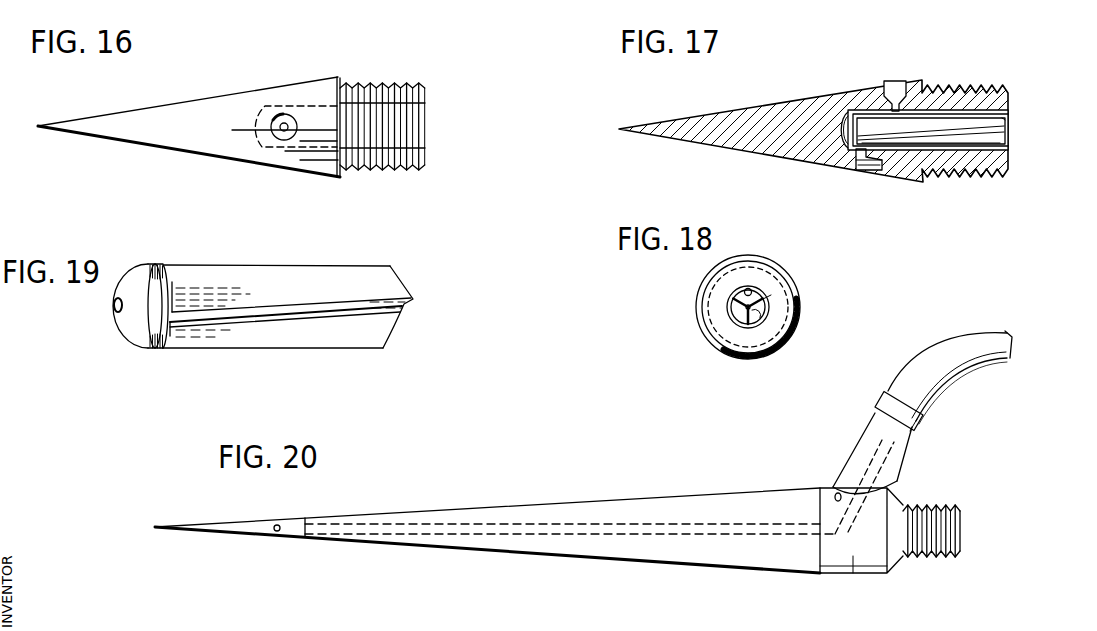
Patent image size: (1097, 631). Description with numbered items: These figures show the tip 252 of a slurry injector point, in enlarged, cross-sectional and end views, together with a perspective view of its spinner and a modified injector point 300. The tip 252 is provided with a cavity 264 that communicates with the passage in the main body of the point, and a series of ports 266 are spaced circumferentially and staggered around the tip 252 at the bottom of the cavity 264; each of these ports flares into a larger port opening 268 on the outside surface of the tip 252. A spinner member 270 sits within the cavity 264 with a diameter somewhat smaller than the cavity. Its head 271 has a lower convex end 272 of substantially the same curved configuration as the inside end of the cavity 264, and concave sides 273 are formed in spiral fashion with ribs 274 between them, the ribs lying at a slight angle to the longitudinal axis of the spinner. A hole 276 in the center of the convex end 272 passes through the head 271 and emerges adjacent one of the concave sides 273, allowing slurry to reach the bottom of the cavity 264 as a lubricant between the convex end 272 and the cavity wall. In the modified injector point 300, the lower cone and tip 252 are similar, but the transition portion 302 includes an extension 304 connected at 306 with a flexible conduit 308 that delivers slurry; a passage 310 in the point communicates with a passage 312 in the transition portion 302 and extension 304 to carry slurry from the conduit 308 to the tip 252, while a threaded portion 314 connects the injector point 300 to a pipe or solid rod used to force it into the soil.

In FIG. 16, the tip 252 is at (177, 120).
In FIG. 20, the tip 252 is at (220, 533).
In FIG. 16, the cavity 264 is at (322, 106).
In FIG. 17, the cavity 264 is at (1005, 116).
In FIG. 18, the cavity 264 is at (730, 311).
In FIG. 16, the ports 266 is at (278, 115).
In FIG. 17, the ports 266 is at (897, 82).
In FIG. 20, the ports 266 is at (289, 519).
In FIG. 17, the port opening 268 is at (868, 172).
In FIG. 17, the spinner member 270 is at (1012, 133).
In FIG. 19, the spinner member 270 is at (325, 259).
In FIG. 18, the spinner member 270 is at (726, 323).
In FIG. 19, the head 271 is at (152, 263).
In FIG. 19, the convex end 272 is at (136, 326).
In FIG. 19, the concave sides 273 is at (357, 280).
In FIG. 18, the concave sides 273 is at (768, 296).
In FIG. 19, the ribs 274 is at (265, 266).
In FIG. 18, the ribs 274 is at (770, 300).
In FIG. 17, the hole 276 is at (845, 105).
In FIG. 19, the hole 276 is at (112, 307).
In FIG. 18, the hole 276 is at (752, 290).
In FIG. 20, the injector point 300 is at (584, 469).
In FIG. 20, the transition portion 302 is at (855, 575).
In FIG. 20, the extension 304 is at (897, 458).
In FIG. 20, the connection 306 is at (882, 401).
In FIG. 20, the flexible conduit 308 is at (968, 350).
In FIG. 20, the passage 310 is at (706, 537).
In FIG. 20, the passage 312 is at (834, 495).
In FIG. 20, the threaded portion 314 is at (945, 520).